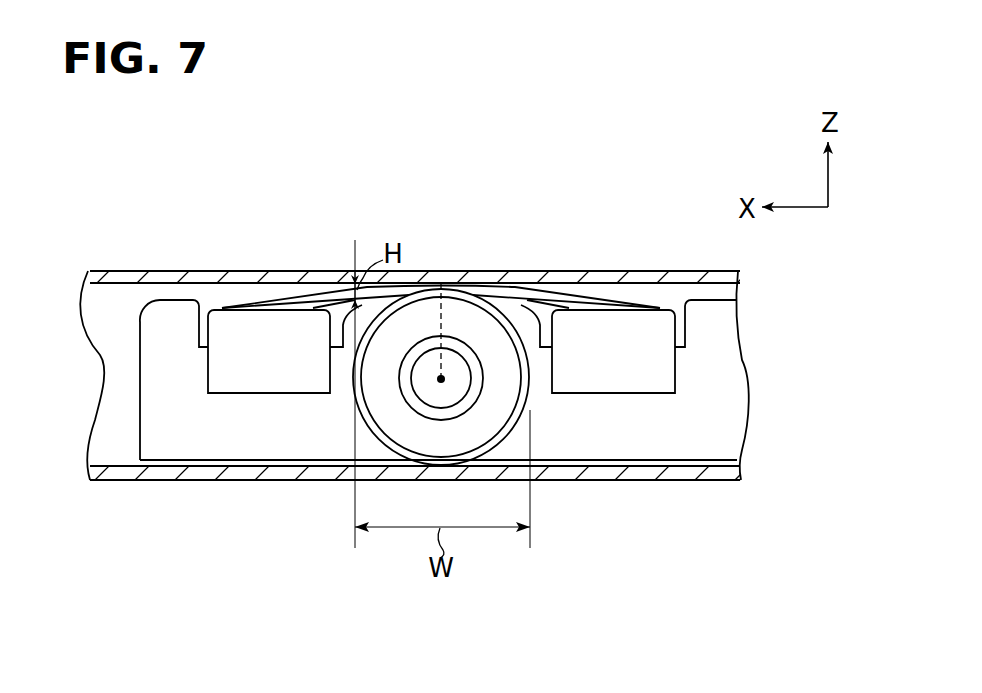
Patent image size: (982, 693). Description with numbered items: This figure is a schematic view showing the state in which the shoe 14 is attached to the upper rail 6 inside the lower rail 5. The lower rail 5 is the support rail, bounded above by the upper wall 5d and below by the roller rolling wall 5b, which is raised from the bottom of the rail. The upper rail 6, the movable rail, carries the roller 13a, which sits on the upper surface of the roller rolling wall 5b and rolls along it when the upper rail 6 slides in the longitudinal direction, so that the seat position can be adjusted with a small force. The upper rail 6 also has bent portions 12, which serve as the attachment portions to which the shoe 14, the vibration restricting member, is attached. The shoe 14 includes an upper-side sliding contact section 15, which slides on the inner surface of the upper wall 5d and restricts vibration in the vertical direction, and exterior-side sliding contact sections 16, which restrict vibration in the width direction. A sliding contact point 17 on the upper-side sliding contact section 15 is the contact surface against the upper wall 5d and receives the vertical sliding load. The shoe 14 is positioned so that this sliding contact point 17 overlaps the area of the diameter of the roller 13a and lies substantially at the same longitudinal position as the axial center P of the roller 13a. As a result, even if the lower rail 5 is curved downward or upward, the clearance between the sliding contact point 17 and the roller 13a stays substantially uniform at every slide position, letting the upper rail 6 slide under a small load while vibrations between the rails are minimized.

The lower rail 5 is at (313, 271).
The roller rolling wall 5b is at (615, 481).
The upper wall 5d is at (512, 283).
The upper rail 6 is at (173, 299).
The bent portion 12 is at (150, 325).
The roller 13a is at (372, 389).
The shoe 14 is at (623, 303).
The upper-side sliding contact section 15 is at (546, 291).
The exterior-side sliding contact section 16 is at (232, 394).
The sliding contact point 17 is at (441, 271).
The axial center of the roller P is at (445, 378).